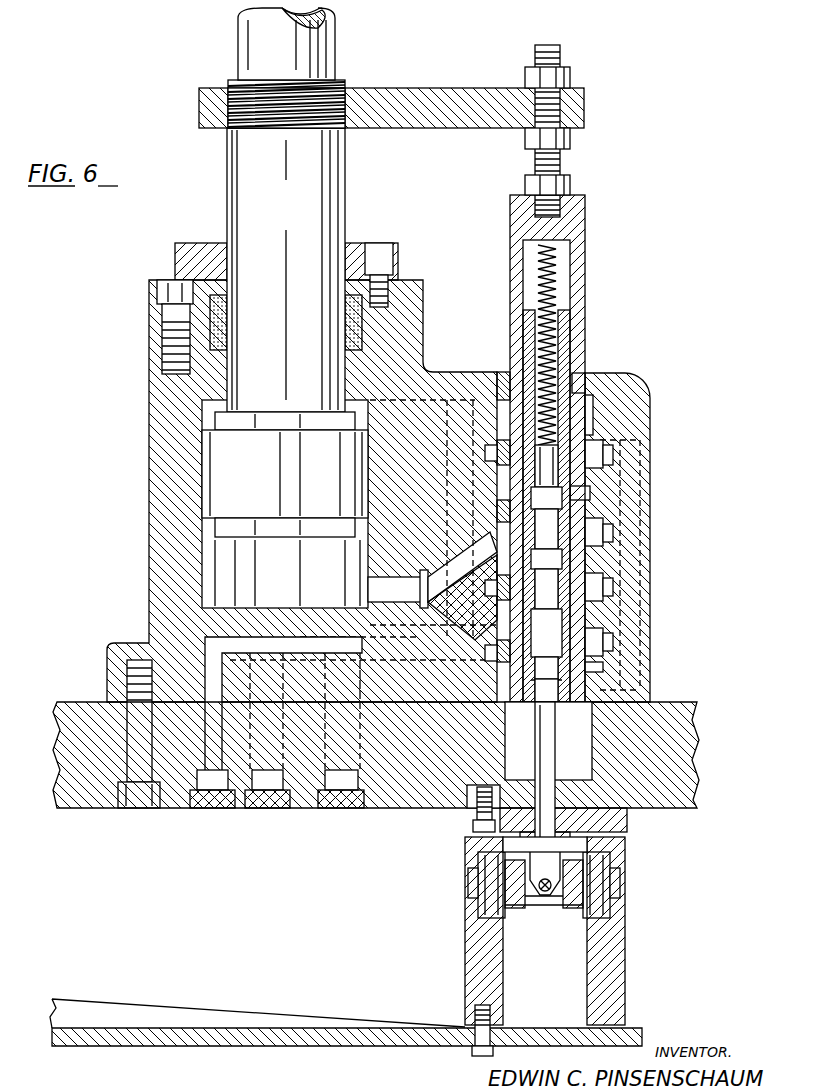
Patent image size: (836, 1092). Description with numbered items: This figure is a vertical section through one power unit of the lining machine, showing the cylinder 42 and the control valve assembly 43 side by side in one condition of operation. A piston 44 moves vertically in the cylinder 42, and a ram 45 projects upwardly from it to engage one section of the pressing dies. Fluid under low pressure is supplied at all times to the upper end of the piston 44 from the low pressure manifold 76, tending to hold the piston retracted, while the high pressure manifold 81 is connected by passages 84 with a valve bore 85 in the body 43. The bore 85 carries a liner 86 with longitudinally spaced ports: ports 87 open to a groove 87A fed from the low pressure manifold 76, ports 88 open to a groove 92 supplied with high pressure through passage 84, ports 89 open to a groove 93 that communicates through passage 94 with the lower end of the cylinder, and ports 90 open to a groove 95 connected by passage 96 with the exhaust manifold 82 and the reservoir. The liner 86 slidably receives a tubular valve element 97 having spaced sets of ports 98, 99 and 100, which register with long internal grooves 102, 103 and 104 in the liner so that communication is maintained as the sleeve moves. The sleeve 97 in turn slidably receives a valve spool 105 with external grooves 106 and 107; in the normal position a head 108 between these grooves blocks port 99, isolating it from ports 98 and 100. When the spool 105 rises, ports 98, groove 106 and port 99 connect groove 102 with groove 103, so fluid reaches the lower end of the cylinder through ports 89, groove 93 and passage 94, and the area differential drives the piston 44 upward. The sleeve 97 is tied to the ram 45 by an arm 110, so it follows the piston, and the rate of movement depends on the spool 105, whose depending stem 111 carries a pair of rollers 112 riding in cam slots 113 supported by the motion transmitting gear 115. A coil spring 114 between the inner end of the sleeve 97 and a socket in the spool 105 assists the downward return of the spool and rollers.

The arm 110 is at (410, 88).
The ram 45 is at (292, 211).
The tubular valve element 97 is at (586, 216).
The coil spring 114 is at (556, 272).
The liner 86 is at (503, 372).
The ports 100 is at (574, 381).
The elongated groove 104 is at (591, 398).
The control valve assembly 43 is at (638, 404).
The groove 95 is at (600, 445).
The ports 90 is at (608, 460).
The external groove 107 is at (560, 474).
The port 99 is at (583, 494).
The ports 89 is at (590, 527).
The head 108 is at (547, 502).
The elongated groove 103 is at (588, 524).
The groove 93 is at (608, 545).
The external groove 106 is at (560, 569).
The ports 88 is at (592, 583).
The groove 92 is at (608, 592).
The ports 98 is at (578, 588).
The ports 87 is at (594, 642).
The groove 87A is at (608, 652).
The elongated groove 102 is at (582, 624).
The valve bore 85 is at (600, 666).
The passage 94 is at (440, 578).
The cylinder 42 is at (150, 517).
The piston 44 is at (278, 481).
The passages 84 is at (420, 652).
The valve spool 105 is at (532, 698).
The passage 96 is at (620, 705).
The stem 111 is at (556, 766).
The high pressure manifold 81 is at (206, 780).
The low pressure manifold 76 is at (278, 780).
The exhaust manifold 82 is at (355, 782).
The cam slots 113 is at (477, 858).
The rollers 112 is at (478, 912).
The motion transmitting gear 115 is at (170, 1046).